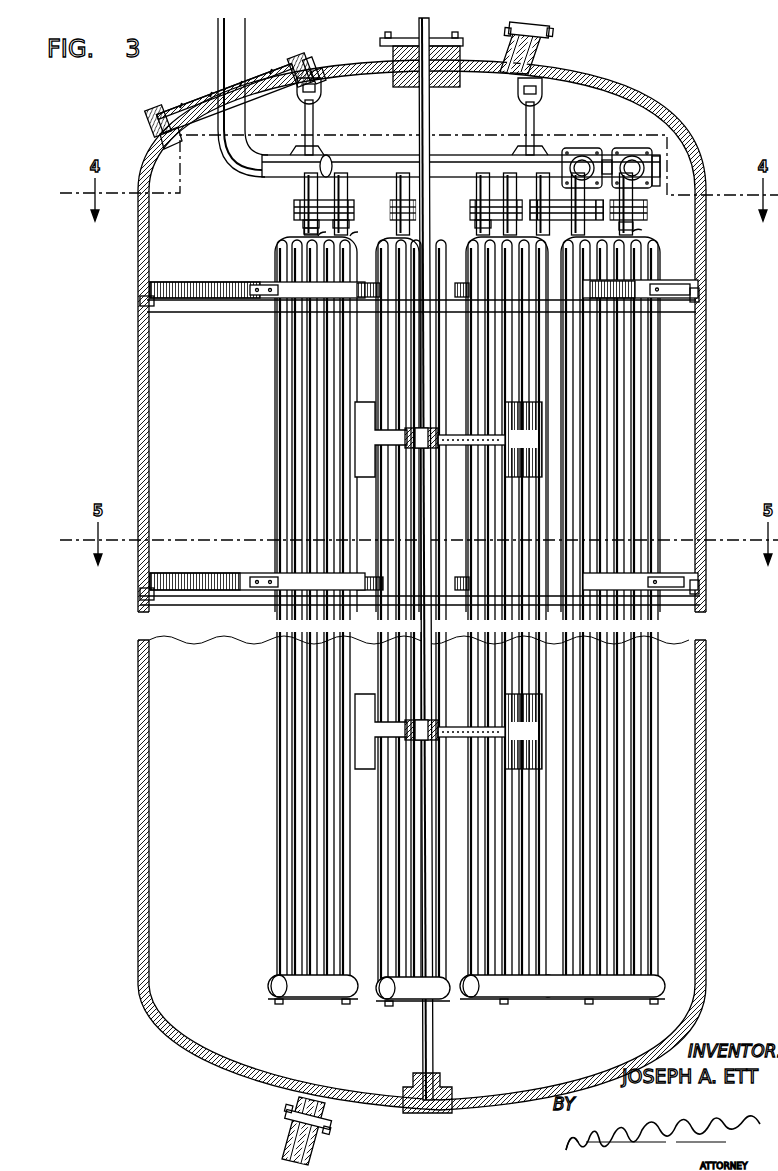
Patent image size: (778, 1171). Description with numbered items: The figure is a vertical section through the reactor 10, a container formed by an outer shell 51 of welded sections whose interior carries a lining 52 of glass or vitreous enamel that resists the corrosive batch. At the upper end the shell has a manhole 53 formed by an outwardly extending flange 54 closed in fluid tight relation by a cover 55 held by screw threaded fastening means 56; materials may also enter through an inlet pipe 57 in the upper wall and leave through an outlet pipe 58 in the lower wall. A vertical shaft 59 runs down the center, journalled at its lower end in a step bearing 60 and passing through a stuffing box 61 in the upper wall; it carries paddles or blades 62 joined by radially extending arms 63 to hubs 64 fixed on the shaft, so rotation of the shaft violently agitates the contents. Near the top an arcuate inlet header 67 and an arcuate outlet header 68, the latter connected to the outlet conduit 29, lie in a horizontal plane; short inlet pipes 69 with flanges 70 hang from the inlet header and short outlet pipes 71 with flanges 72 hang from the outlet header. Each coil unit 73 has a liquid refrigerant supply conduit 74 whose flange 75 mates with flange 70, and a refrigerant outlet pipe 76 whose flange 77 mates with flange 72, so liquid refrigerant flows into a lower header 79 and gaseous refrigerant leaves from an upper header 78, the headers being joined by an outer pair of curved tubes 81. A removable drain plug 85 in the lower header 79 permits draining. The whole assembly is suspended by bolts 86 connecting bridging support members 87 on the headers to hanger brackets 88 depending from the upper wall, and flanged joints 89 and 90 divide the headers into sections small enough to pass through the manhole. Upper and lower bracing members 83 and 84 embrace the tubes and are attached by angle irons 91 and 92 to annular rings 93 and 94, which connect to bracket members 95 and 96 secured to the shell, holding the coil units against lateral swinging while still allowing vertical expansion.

The reactor 10 is at (450, 585).
The outlet conduit 29 is at (246, 40).
The outer shell 51 is at (708, 655).
The lining 52 is at (706, 470).
The manhole 53 is at (287, 82).
The flange 54 is at (322, 70).
The cover 55 is at (314, 52).
The screw threaded fastening means 56 is at (303, 56).
The inlet pipe 57 is at (505, 48).
The outlet pipe 58 is at (330, 1120).
The vertical shaft 59 is at (434, 1025).
The step bearing 60 is at (452, 1082).
The stuffing box 61 is at (455, 40).
The paddles or blades 62 is at (362, 478).
The radially extending arms 63 is at (455, 447).
The hubs 64 is at (438, 430).
The inlet header 67 is at (387, 155).
The outlet header 68 is at (265, 177).
The inlet pipes 69 is at (348, 182).
The flange 70 is at (354, 208).
The outlet pipes 71 is at (304, 190).
The flanges 72 is at (294, 208).
The coil units 73 is at (272, 450).
The liquid refrigerant supply conduit 74 is at (348, 375).
The flange 75 is at (349, 223).
The refrigerant outlet pipe 76 is at (304, 234).
The flange 77 is at (303, 223).
The upper header 78 is at (312, 240).
The lower header 79 is at (278, 999).
The outer pair of tubes 81 is at (280, 826).
The upper bracing member 83 is at (275, 301).
The lower bracing member 84 is at (308, 578).
The drain plug 85 is at (348, 1004).
The bolts 86 is at (315, 120).
The bridging support members 87 is at (324, 148).
The hanger brackets 88 is at (322, 86).
The flanged joint 89 is at (584, 148).
The flanged joint 90 is at (630, 148).
The angle irons 91 is at (692, 288).
The angle irons 92 is at (700, 580).
The annular ring 93 is at (215, 286).
The annular ring 94 is at (215, 585).
The bracket member 95 is at (160, 312).
The bracket member 96 is at (150, 605).